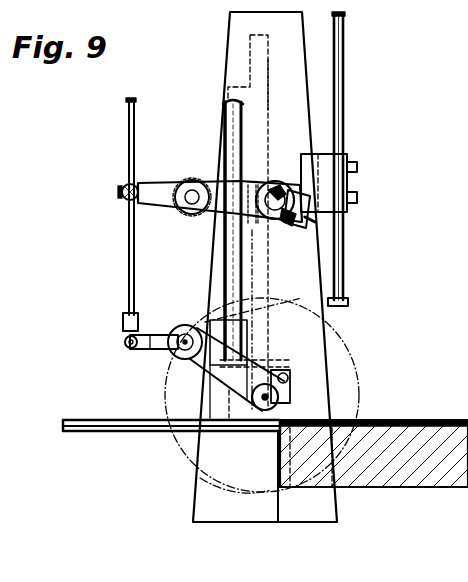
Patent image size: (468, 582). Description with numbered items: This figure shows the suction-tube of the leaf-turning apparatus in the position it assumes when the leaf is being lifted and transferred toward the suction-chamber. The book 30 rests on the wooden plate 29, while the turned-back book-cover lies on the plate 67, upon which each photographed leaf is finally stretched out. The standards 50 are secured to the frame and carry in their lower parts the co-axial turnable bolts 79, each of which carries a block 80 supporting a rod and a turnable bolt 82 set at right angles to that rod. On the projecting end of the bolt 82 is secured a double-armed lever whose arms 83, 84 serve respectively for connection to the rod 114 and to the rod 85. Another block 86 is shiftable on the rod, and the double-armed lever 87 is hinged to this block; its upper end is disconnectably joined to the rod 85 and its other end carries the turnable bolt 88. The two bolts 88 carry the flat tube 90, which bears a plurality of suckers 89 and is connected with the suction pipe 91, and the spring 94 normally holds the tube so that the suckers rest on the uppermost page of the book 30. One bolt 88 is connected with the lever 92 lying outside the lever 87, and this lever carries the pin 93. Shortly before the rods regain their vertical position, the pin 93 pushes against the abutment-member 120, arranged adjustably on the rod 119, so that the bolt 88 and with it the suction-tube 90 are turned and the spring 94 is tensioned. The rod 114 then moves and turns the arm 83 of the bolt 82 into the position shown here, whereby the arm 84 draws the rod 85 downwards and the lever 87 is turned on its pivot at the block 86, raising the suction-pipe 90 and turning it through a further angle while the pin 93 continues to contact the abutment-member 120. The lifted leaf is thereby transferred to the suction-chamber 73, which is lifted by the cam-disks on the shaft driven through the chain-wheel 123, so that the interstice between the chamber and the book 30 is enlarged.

The wooden plate 29 is at (408, 488).
The book 30 is at (426, 420).
The standards 50 is at (248, 216).
The plate 67 is at (124, 431).
The sheet-metal box 73 is at (269, 78).
The turnable bolt 79 is at (272, 390).
The block 80 is at (214, 390).
The turnable bolt 82 is at (170, 350).
The arm of double-armed lever 83 is at (262, 362).
The arm of double-armed lever 84 is at (151, 334).
The rod 85 is at (128, 262).
The block 86 is at (206, 214).
The double-armed lever 87 is at (165, 203).
The turnable bolt 88 is at (262, 222).
The suckers 89 is at (292, 222).
The flat tube 90 is at (277, 182).
The suction pipe 91 is at (250, 228).
The lever 92 is at (300, 230).
The pin 93 is at (312, 222).
The spring 94 is at (244, 142).
The rod 114 is at (296, 494).
The rod 119 is at (347, 99).
The abutment-member 120 is at (348, 161).
The chain-wheel 123 is at (358, 366).